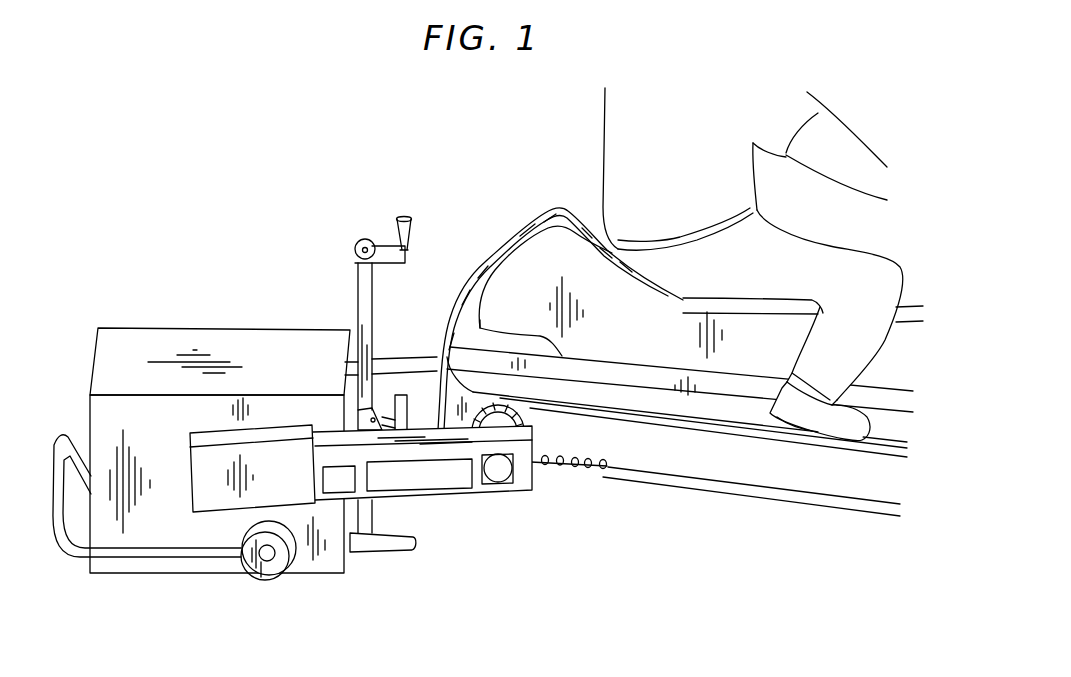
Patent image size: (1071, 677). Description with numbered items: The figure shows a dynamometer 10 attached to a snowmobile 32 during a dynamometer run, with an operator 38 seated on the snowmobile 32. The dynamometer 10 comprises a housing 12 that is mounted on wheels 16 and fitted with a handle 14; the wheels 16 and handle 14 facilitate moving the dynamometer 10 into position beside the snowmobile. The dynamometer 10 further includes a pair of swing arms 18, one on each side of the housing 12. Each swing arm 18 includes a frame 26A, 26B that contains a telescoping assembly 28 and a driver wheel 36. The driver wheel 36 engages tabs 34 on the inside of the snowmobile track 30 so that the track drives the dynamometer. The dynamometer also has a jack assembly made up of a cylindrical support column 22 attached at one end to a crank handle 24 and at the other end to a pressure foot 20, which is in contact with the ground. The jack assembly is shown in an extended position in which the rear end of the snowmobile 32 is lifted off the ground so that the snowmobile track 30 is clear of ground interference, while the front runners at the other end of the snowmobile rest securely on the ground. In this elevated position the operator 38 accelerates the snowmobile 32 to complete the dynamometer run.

The dynamometer 10 is at (134, 274).
The housing 12 is at (97, 352).
The handle 14 is at (62, 442).
The wheels 16 is at (273, 578).
The swing arm 18 is at (190, 497).
The pressure foot 20 is at (385, 552).
The cylindrical support column 22 is at (357, 298).
The crank handle 24 is at (393, 230).
The frame 26A is at (428, 497).
The frame 26B is at (395, 363).
The telescoping assembly 28 is at (501, 472).
The snowmobile track 30 is at (680, 480).
The snowmobile 32 is at (510, 228).
The tabs 34 is at (607, 467).
The driver wheel 36 is at (530, 422).
The operator 38 is at (672, 165).